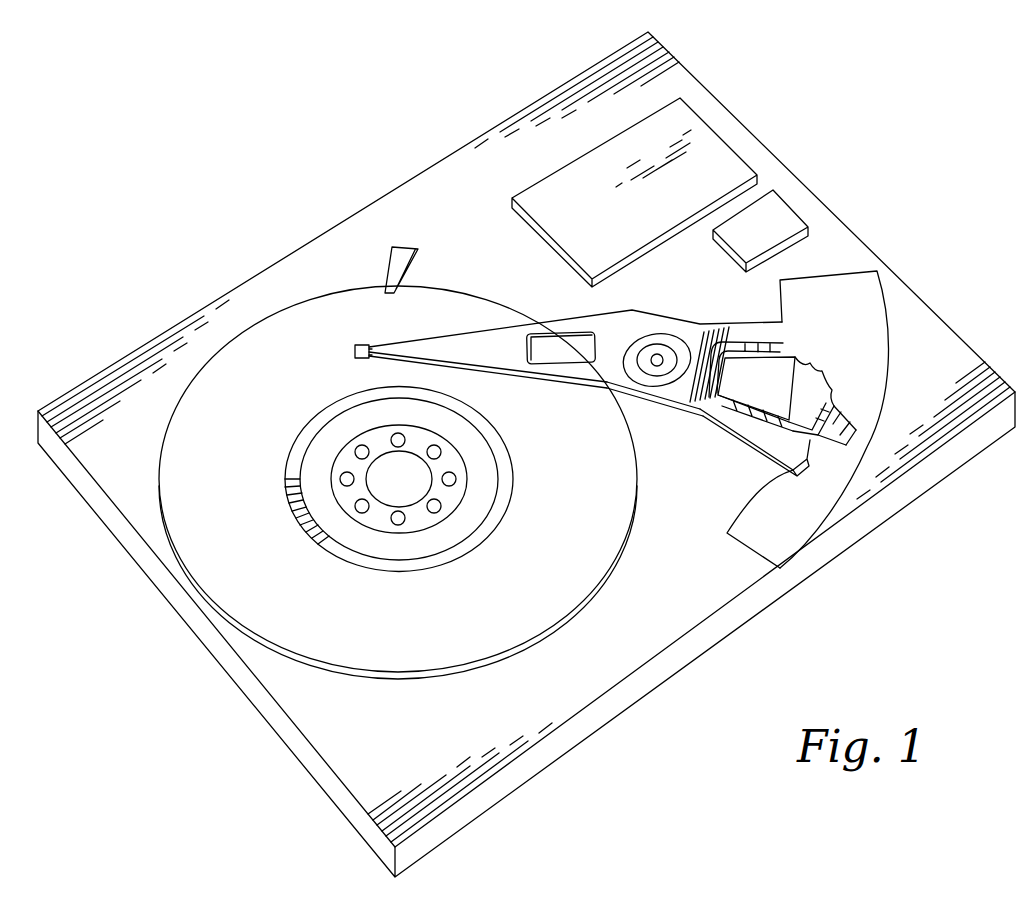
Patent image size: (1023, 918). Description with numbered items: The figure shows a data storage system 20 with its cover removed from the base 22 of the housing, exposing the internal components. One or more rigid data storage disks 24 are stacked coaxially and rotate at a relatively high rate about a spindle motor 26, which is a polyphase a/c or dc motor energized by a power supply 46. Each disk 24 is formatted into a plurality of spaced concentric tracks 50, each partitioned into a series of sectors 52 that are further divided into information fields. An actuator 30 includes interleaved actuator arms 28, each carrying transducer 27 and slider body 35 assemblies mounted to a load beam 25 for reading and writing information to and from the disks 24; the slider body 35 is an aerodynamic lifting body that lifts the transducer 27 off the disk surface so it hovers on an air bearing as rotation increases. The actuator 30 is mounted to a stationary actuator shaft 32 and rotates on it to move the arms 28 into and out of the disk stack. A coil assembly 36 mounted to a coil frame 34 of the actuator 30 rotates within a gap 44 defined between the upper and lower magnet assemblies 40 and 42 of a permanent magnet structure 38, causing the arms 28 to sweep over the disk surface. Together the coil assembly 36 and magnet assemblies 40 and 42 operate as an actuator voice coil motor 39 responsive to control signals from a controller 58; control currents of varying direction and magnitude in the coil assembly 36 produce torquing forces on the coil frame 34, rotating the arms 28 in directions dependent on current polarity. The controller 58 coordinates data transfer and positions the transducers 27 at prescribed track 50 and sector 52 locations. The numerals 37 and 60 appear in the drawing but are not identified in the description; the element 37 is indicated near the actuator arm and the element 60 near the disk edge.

The data storage system 20 is at (826, 149).
The base 22 is at (698, 645).
The data storage disk 24 is at (224, 468).
The load beam 25 is at (380, 357).
The spindle motor 26 is at (412, 503).
The transducer 27 is at (361, 360).
The actuator arm 28 is at (500, 353).
The actuator 30 is at (678, 400).
The actuator shaft 32 is at (657, 354).
The coil frame 34 is at (712, 340).
The slider body 35 is at (358, 343).
The coil assembly 36 is at (738, 366).
The actuator assembly 37 is at (572, 388).
The permanent magnet structure 38 is at (822, 413).
The actuator voice coil motor 39 is at (770, 469).
The upper magnet assembly 40 is at (866, 342).
The lower magnet assembly 42 is at (742, 538).
The gap 44 is at (849, 440).
The power supply 46 is at (579, 226).
The track 50 is at (300, 433).
The sector 52 is at (287, 509).
The controller 58 is at (747, 238).
The filter 60 is at (406, 246).